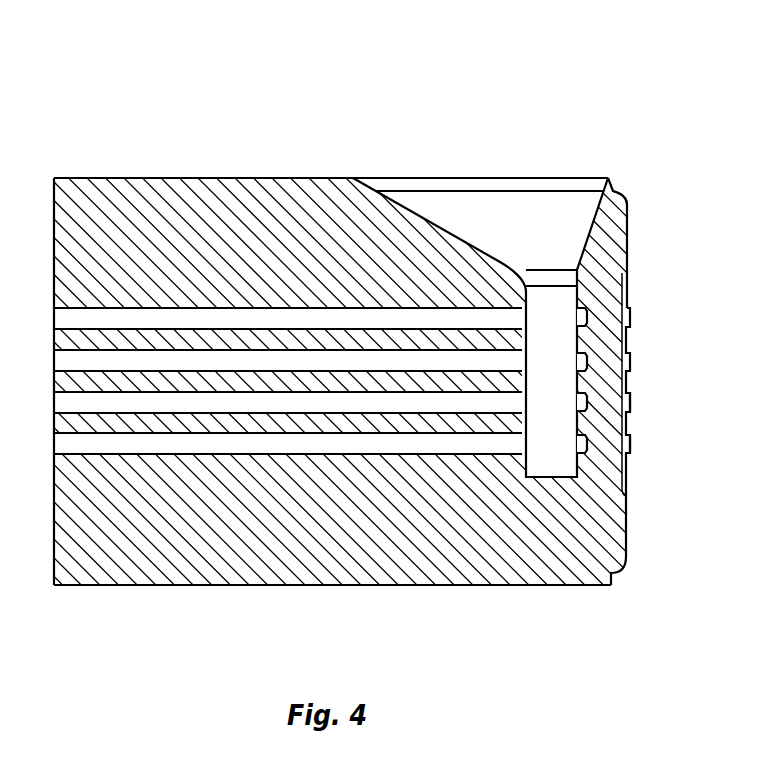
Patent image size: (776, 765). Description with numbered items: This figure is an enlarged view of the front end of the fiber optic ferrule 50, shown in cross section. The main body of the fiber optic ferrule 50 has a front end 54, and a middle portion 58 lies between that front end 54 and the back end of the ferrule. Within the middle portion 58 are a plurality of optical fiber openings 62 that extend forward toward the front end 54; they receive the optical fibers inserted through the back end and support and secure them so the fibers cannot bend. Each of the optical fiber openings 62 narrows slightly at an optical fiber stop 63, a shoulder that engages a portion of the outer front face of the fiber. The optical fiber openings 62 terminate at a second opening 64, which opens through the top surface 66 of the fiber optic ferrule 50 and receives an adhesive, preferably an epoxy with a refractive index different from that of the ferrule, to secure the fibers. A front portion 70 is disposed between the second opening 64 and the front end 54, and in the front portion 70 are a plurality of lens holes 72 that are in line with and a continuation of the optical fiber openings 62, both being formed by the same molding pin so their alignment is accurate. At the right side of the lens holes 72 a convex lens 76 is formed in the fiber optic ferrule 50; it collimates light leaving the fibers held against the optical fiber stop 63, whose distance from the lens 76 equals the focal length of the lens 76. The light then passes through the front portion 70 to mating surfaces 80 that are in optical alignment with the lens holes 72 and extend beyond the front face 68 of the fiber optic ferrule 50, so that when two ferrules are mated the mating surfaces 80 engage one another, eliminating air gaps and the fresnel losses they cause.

The fiber optic ferrule 50 is at (661, 96).
The front end 54 is at (660, 527).
The middle portion 58 is at (354, 585).
The optical fiber openings 62 is at (307, 317).
The optical fiber stop 63 is at (489, 308).
The second opening 64 is at (547, 235).
The top surface 66 is at (205, 177).
The front face 68 is at (629, 200).
The front portion 70 is at (610, 238).
The lens holes 72 is at (587, 321).
The lens 76 is at (587, 361).
The mating surfaces 80 is at (631, 410).